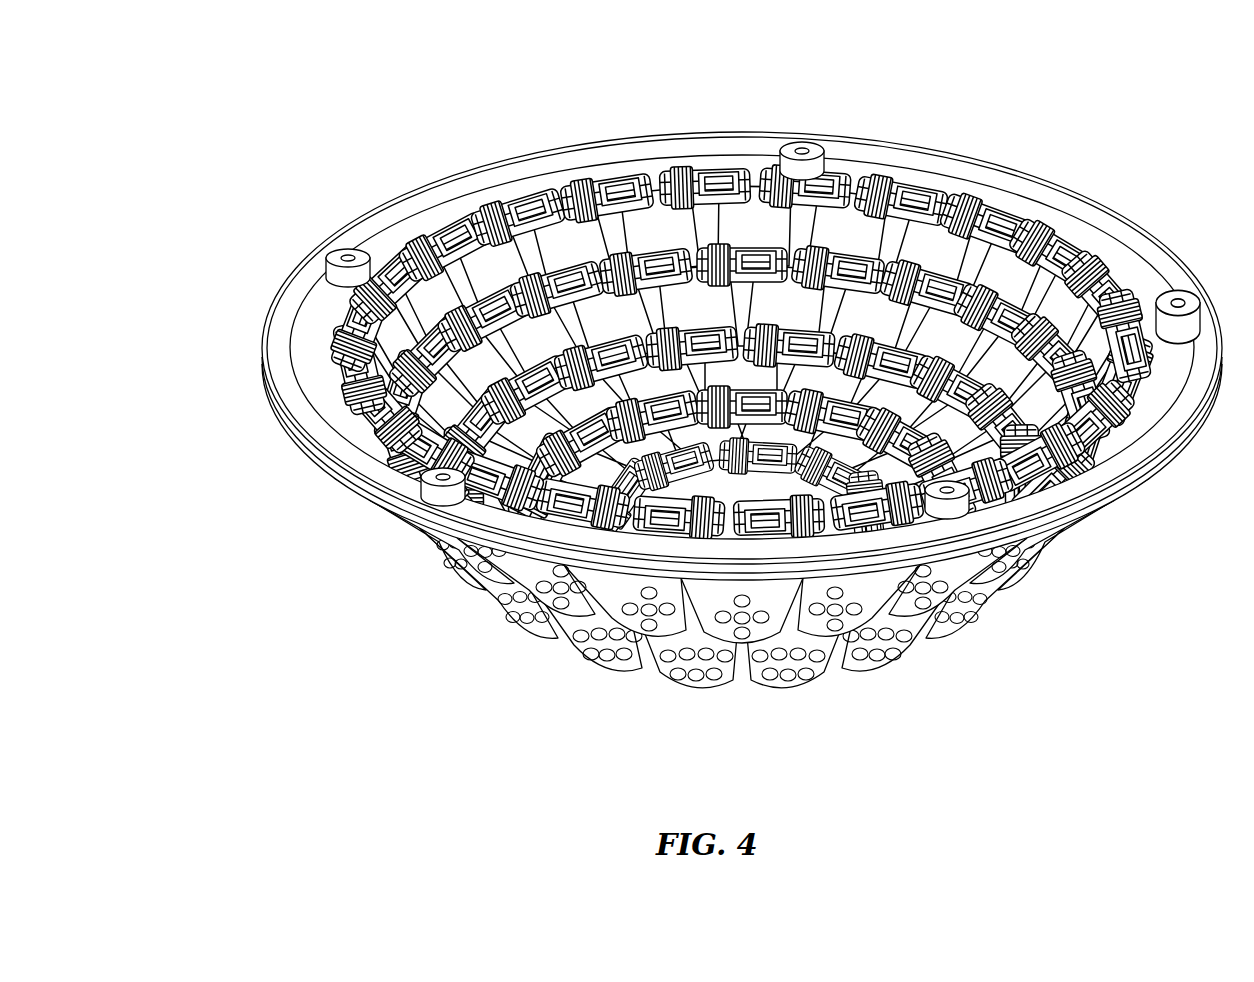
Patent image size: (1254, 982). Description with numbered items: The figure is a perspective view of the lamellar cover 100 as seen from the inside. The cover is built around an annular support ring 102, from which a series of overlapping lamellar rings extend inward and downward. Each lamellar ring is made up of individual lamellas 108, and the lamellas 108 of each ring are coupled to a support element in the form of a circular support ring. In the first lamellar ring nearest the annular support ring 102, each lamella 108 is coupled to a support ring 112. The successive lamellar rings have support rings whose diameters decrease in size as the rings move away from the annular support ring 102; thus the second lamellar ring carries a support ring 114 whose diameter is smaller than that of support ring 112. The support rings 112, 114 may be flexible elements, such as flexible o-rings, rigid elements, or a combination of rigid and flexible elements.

The expandable bowl assembly 100 is at (262, 104).
The annular support ring 102 is at (1023, 178).
The lamella 108 is at (397, 318).
The support ring 112 is at (697, 181).
The support ring 114 is at (1023, 297).